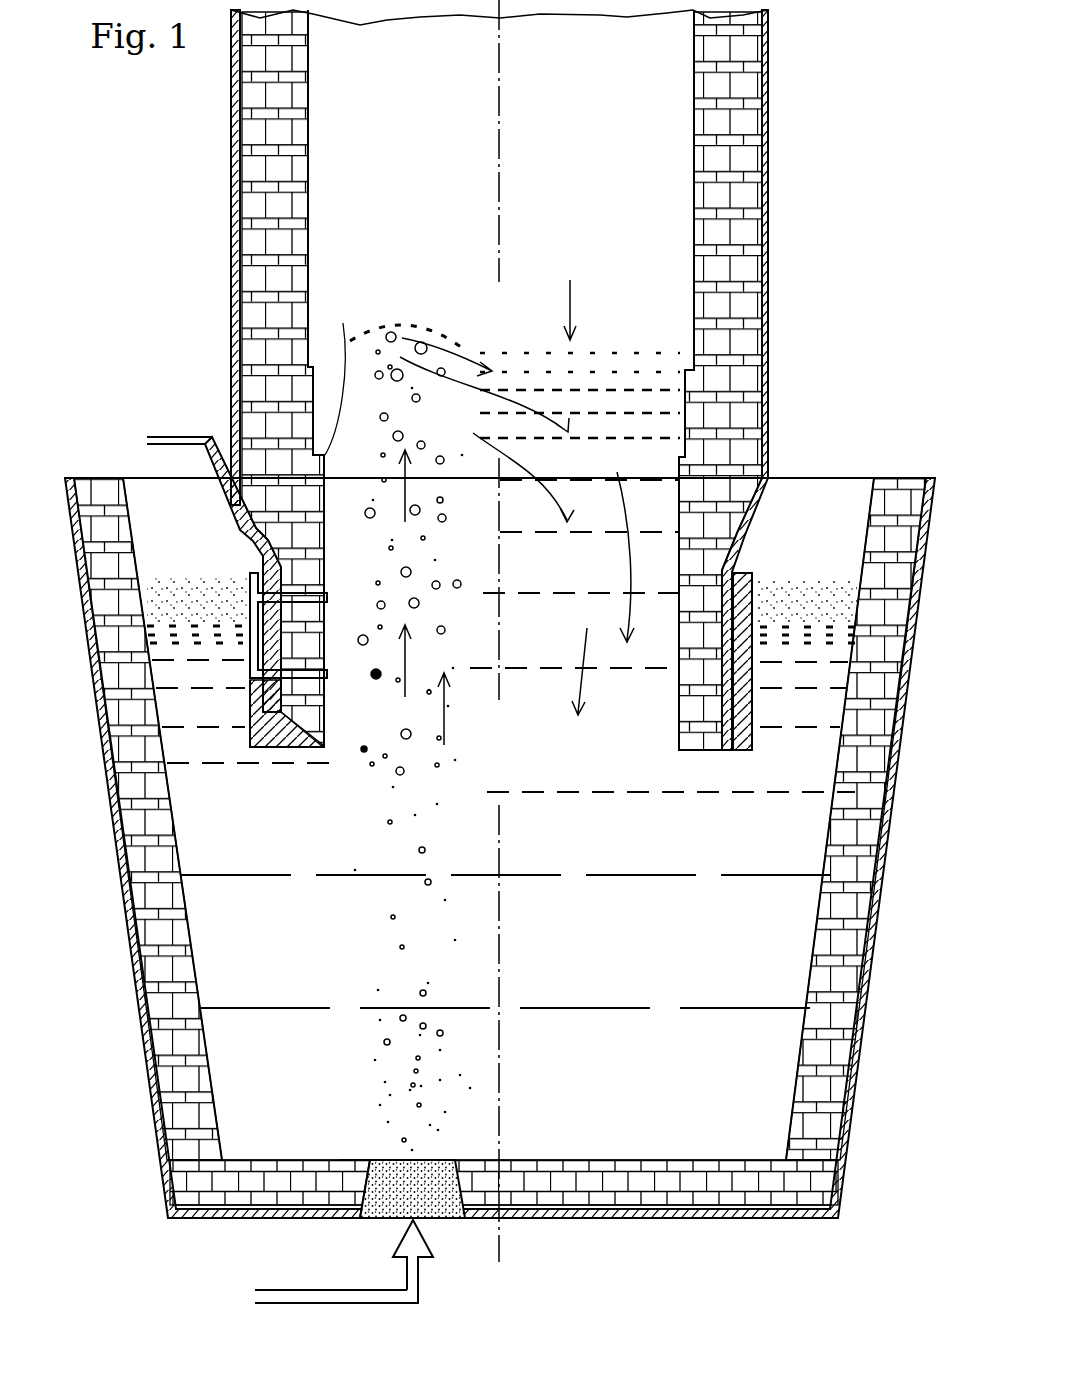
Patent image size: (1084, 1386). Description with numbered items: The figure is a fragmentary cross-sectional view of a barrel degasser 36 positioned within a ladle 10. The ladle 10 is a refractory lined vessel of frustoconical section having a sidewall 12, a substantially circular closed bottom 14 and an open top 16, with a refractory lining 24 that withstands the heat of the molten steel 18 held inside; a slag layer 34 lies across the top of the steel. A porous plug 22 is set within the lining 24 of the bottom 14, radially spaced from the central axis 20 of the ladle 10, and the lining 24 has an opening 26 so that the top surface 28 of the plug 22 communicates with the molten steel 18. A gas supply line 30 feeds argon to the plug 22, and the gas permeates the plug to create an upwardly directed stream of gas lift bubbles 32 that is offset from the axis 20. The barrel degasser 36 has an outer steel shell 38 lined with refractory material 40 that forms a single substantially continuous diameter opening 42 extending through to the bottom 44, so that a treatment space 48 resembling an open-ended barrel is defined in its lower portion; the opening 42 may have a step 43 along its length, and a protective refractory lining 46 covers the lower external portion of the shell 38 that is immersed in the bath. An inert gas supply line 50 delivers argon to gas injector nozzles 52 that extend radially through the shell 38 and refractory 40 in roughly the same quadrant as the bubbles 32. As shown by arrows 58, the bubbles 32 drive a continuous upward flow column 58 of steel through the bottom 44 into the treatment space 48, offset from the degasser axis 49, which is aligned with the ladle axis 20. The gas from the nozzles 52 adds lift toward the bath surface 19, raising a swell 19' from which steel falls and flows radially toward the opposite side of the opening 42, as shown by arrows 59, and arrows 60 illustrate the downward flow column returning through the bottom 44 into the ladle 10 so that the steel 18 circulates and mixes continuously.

The ladle 10 is at (886, 1081).
The sidewall 12 is at (812, 1003).
The bottom 14 is at (565, 1220).
The open top 16 is at (803, 478).
The molten steel 18 is at (591, 975).
The bath surface 19 is at (580, 303).
The swell 19' is at (412, 311).
The central axis 20 is at (502, 985).
The porous plug 22 is at (440, 1183).
The refractory lining 24 is at (583, 1183).
The opening 26 is at (370, 1160).
The top surface 28 is at (400, 1160).
The gas supply line 30 is at (430, 1245).
The gas lift bubbles 32 is at (393, 820).
The slag layer 34 is at (165, 592).
The barrel degasser 36 is at (780, 225).
The outer steel shell 38 is at (770, 395).
The refractory material 40 is at (688, 338).
The opening 42 is at (687, 195).
The step 43 is at (313, 367).
The bottom 44 is at (700, 755).
The protective refractory lining 46 is at (798, 632).
The treatment space 48 is at (566, 291).
The axis 49 is at (498, 196).
The inert gas supply line 50 is at (192, 437).
The gas injector nozzles 52 is at (327, 597).
The upward flow column 58 is at (402, 515).
The radial flow arrows 59 is at (463, 363).
The downward flow column arrows 60 is at (587, 657).